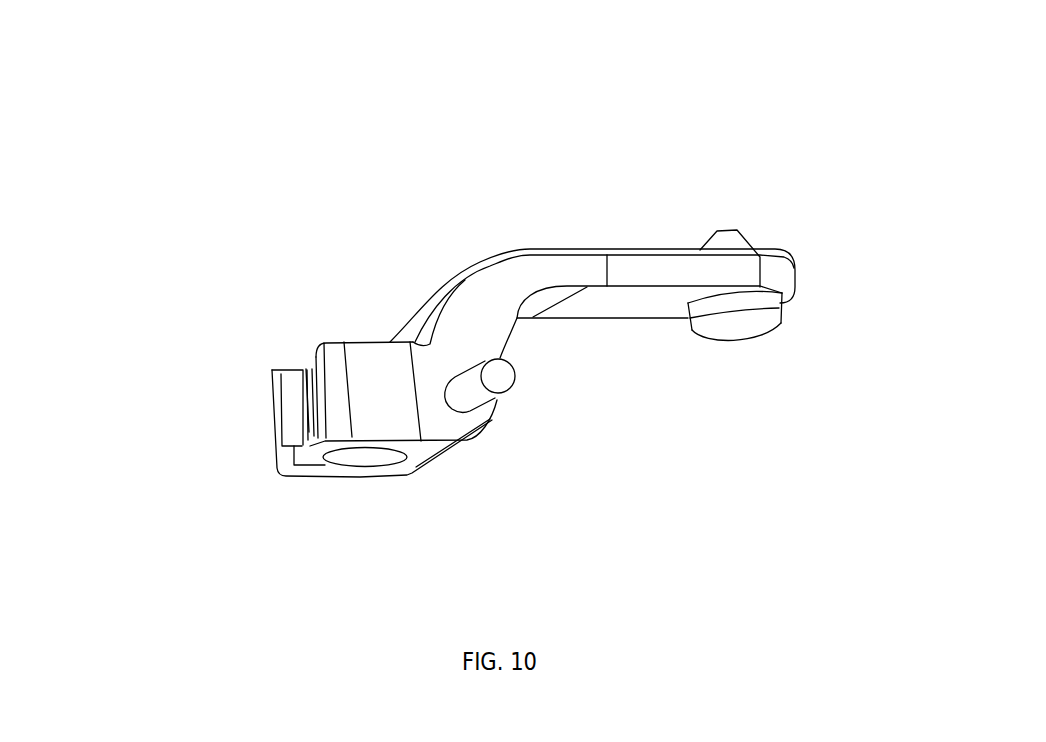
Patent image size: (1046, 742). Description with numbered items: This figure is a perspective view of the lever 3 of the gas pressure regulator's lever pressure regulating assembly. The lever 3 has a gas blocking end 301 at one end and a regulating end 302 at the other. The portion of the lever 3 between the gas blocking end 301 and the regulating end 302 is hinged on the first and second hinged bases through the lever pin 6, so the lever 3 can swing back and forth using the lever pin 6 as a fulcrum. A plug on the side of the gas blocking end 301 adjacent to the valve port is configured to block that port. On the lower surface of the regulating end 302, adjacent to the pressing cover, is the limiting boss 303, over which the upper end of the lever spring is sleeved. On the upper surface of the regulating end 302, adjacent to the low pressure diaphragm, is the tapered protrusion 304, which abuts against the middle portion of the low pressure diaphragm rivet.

The lever 3 is at (523, 207).
The gas blocking end 301 is at (365, 380).
The regulating end 302 is at (658, 270).
The limiting boss 303 is at (752, 325).
The tapered protrusion 304 is at (745, 238).
The lever pin 6 is at (495, 397).